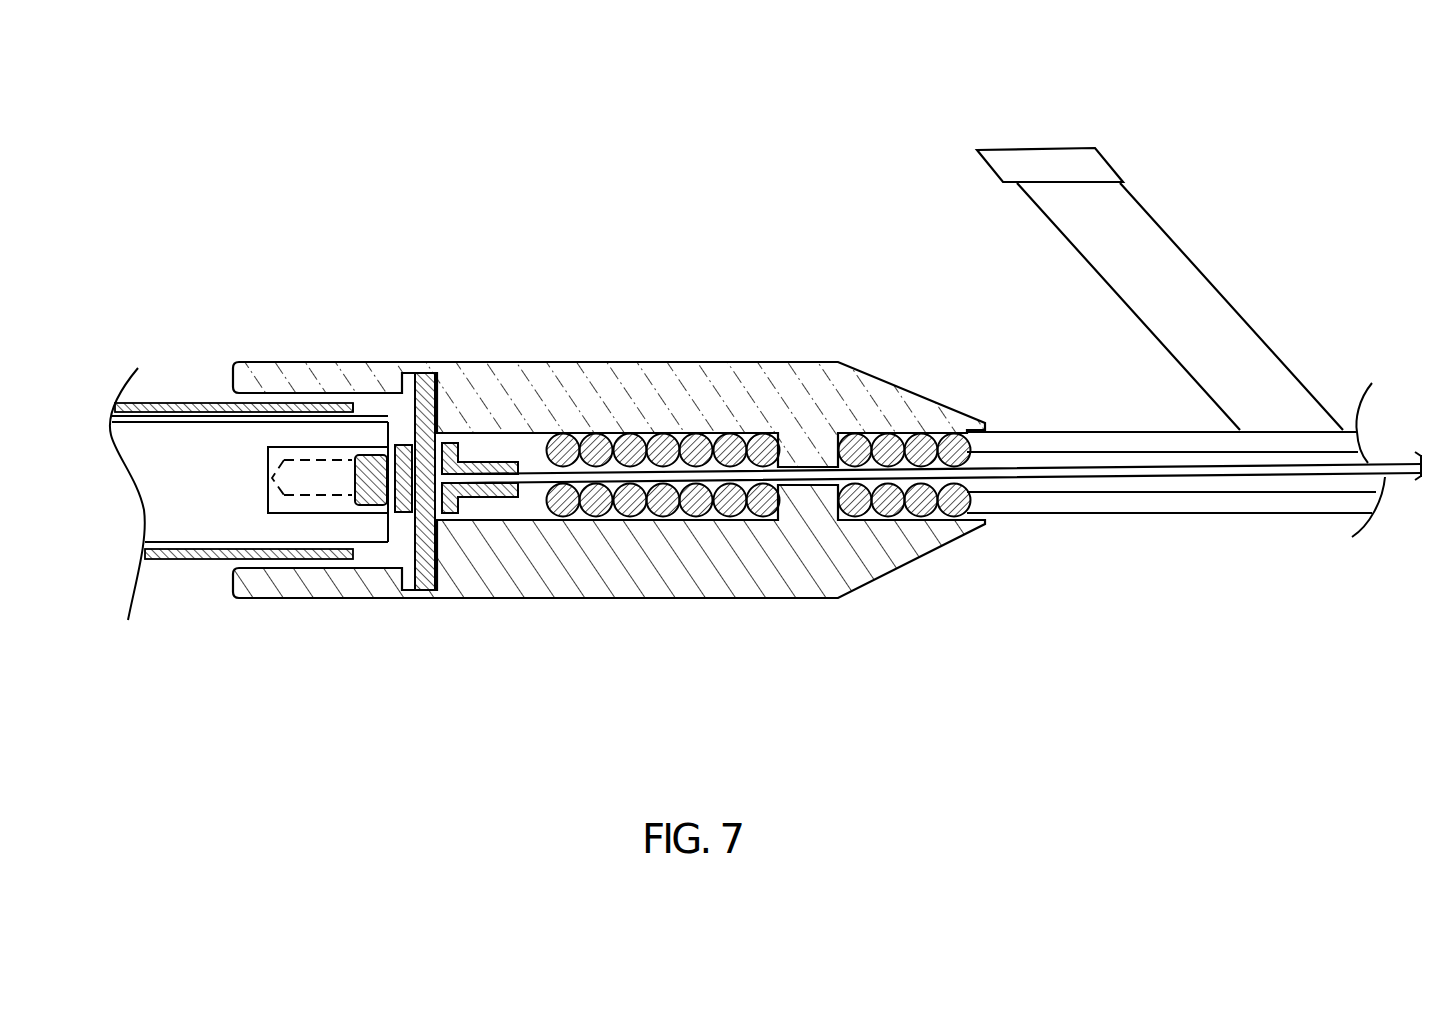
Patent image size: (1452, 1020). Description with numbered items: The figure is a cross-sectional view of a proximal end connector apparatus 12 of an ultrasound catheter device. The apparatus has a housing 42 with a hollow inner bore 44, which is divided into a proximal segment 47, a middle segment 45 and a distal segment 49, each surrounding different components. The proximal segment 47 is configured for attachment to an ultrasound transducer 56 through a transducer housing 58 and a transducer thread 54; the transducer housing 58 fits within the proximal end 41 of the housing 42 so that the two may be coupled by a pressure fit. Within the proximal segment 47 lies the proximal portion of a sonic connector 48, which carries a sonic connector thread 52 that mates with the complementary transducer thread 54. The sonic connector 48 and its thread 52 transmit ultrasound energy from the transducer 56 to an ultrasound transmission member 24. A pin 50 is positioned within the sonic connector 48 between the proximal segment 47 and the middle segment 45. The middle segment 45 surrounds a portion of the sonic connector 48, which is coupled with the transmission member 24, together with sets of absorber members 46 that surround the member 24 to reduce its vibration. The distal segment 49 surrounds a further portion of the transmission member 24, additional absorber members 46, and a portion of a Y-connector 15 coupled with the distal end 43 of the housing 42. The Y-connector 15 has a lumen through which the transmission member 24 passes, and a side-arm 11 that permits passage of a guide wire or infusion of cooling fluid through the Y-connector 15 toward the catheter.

The side-arm 11 is at (1240, 320).
The proximal end connector apparatus 12 is at (757, 108).
The Y-connector 15 is at (1093, 515).
The ultrasound transmission member 24 is at (1400, 480).
The proximal end 41 is at (231, 380).
The housing 42 is at (668, 598).
The distal end 43 is at (993, 425).
The hollow inner bore 44 is at (600, 522).
The middle segment 45 is at (535, 507).
The absorber members 46 is at (703, 435).
The proximal segment 47 is at (373, 402).
The sonic connector 48 is at (450, 442).
The distal segment 49 is at (907, 432).
The pin 50 is at (428, 592).
The sonic connector thread 52 is at (377, 455).
The transducer thread 54 is at (316, 502).
The ultrasound transducer 56 is at (213, 499).
The transducer housing 58 is at (158, 403).